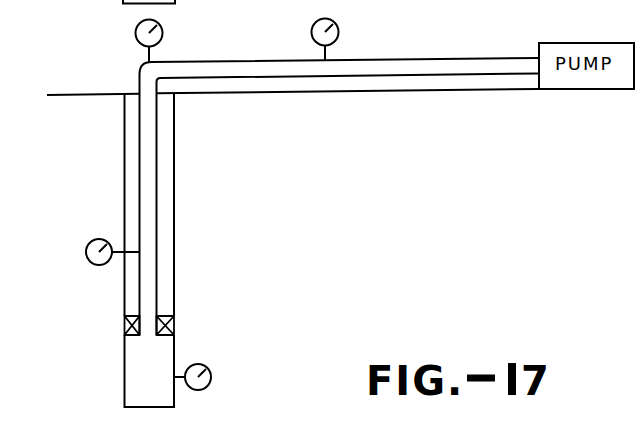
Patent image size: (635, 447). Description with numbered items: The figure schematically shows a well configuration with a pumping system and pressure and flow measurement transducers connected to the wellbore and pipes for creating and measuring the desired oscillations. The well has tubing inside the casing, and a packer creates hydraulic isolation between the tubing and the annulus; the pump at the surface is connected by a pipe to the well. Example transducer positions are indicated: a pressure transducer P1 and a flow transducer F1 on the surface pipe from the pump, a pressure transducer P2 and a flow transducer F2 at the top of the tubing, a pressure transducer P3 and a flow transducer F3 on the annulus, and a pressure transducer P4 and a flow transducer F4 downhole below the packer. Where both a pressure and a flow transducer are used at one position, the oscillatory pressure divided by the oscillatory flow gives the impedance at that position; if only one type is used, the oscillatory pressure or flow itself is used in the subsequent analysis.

The pressure transducer P1 is at (364, 38).
The flow transducer F1 is at (364, 38).
The pressure transducer P2 is at (188, 40).
The flow transducer F2 is at (188, 40).
The pressure transducer P3 is at (92, 239).
The flow transducer F3 is at (92, 239).
The pressure transducer P4 is at (233, 377).
The flow transducer F4 is at (233, 377).